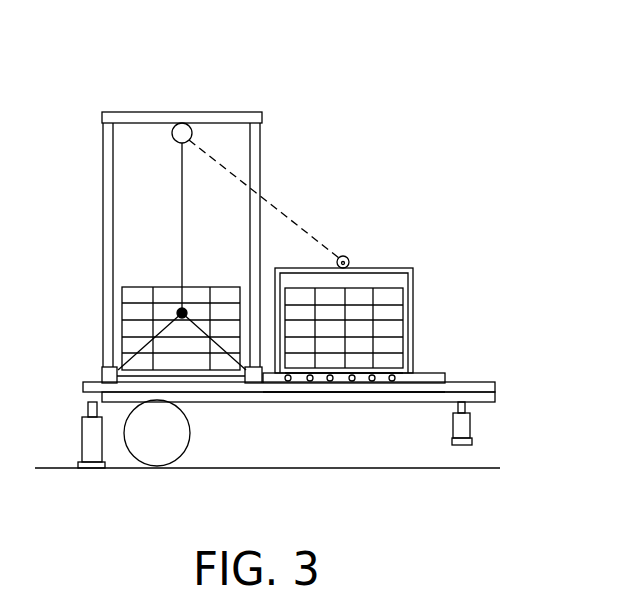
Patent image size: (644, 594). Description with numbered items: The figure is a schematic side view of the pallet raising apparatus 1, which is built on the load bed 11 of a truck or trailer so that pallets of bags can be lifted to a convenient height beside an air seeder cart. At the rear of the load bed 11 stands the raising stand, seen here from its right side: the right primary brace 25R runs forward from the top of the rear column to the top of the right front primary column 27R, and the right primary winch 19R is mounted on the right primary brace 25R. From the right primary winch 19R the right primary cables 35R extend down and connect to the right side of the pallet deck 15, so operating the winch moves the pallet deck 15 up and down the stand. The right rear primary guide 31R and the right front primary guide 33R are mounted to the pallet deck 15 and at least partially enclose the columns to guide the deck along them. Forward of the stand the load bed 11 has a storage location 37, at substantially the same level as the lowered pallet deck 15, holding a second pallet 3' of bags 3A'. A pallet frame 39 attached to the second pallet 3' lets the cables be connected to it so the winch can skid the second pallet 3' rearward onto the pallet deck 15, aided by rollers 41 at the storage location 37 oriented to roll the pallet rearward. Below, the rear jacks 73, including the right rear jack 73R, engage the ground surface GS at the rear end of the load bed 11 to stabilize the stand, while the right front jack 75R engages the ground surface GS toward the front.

The pallet raising apparatus 1 is at (362, 62).
The right primary brace 25R is at (203, 112).
The right front primary column 27R is at (262, 146).
The right primary winch 19R is at (172, 133).
The right primary cables 35R is at (182, 186).
The right rear primary guide 31R is at (102, 373).
The pallet frame 39 is at (366, 268).
The bags 3A' is at (379, 305).
The storage location 37 is at (423, 373).
The rollers 41 is at (355, 380).
The second pallet 3' is at (363, 406).
The load bed 11 is at (477, 383).
The pallet deck 15 is at (207, 383).
The right front primary guide 33R is at (272, 383).
The ground surface GS is at (290, 468).
The rear jacks 73 is at (82, 438).
The right rear jack 73R is at (91, 435).
The right front jack 75R is at (470, 428).